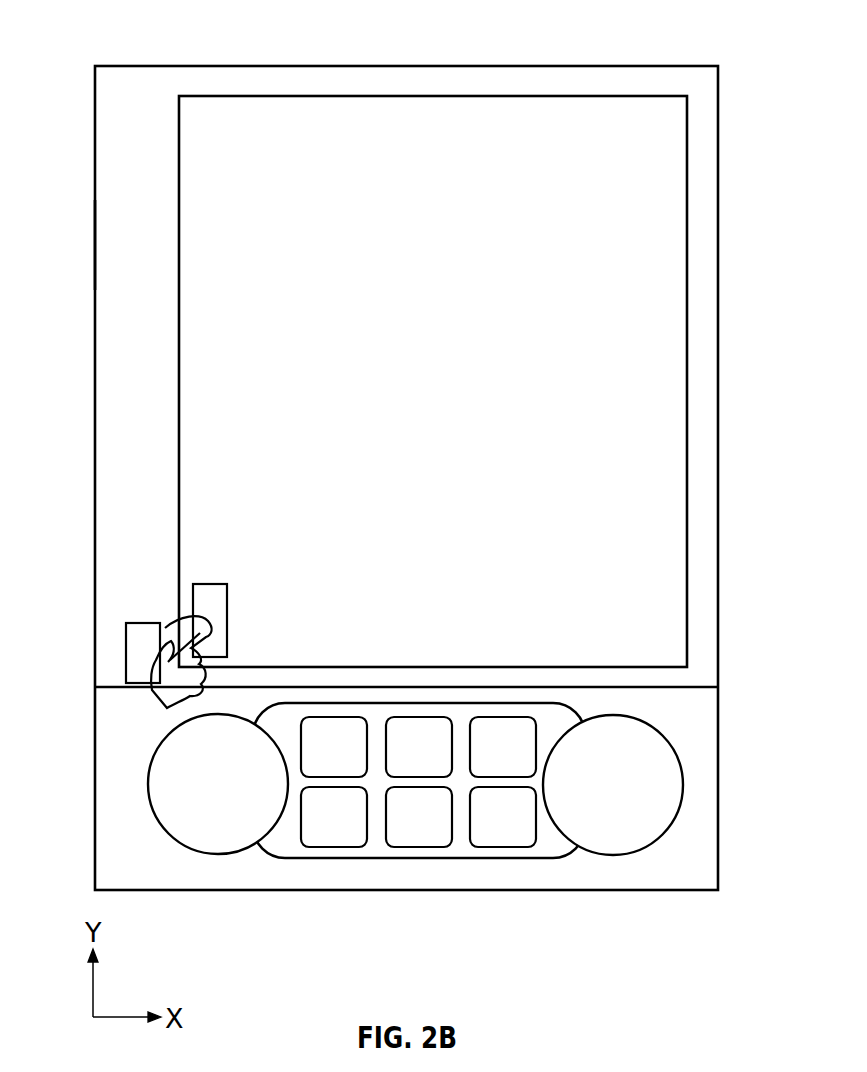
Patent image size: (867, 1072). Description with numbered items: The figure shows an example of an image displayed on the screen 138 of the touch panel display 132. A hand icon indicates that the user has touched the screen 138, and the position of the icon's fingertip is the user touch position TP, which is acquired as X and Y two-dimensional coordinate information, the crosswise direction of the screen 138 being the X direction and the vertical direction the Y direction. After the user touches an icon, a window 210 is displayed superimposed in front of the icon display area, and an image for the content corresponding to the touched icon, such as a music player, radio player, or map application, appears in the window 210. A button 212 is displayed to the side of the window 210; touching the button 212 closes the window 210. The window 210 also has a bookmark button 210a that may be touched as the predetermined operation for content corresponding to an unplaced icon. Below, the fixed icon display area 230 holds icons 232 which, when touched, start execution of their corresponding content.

The screen 138 is at (133, 147).
The touch panel display 132 is at (120, 263).
The window 210 is at (608, 108).
The bookmark button 210a is at (200, 602).
The button 212 is at (132, 633).
The user touch position TP is at (165, 628).
The fixed icon display area 230 is at (548, 847).
The icon 232 is at (355, 743).